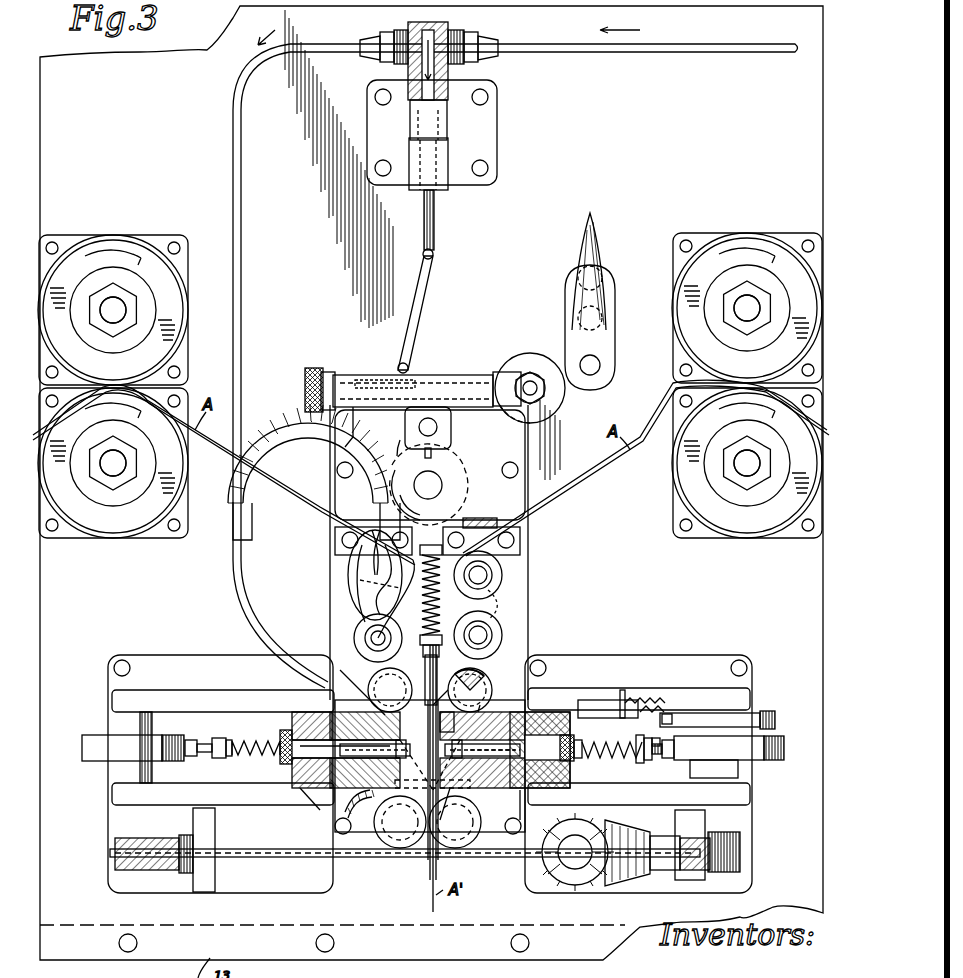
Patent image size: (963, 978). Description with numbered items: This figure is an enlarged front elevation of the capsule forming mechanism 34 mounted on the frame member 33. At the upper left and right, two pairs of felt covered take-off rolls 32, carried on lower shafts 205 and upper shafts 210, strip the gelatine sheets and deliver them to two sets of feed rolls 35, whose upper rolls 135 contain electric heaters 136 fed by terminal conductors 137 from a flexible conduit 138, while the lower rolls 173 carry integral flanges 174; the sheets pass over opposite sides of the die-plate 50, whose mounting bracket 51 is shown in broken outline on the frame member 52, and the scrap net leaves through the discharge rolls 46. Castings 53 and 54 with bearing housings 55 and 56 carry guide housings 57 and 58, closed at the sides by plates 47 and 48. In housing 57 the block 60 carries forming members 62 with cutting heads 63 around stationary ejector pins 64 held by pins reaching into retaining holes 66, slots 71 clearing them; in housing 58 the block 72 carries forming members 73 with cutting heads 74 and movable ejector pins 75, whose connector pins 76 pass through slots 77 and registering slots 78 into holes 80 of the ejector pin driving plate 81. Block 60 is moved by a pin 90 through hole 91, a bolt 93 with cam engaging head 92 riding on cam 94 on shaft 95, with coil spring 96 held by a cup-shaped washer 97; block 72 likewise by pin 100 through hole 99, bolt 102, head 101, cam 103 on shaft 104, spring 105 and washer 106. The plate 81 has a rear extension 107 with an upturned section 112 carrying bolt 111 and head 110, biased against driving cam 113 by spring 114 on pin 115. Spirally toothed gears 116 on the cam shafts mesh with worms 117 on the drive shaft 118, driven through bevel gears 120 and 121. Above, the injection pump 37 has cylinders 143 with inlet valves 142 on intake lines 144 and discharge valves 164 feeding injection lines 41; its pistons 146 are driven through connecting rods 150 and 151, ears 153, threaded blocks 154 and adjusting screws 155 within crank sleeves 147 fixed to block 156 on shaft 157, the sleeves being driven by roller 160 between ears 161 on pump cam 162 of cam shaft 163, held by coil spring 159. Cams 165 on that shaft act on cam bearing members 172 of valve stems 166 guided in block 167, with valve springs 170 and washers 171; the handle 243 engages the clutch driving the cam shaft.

The take-off rolls 32 is at (180, 313).
The frame member 33 is at (215, 45).
The capsule forming mechanism 34 is at (398, 748).
The feed rolls 35 is at (444, 552).
The injection pump 37 is at (470, 132).
The injection lines 41 is at (241, 275).
The discharge rolls 46 is at (402, 848).
The plate 47 is at (280, 790).
The plate 48 is at (574, 762).
The die-plate 50 is at (432, 769).
The mounting bracket 51 is at (380, 795).
The frame member 52 is at (522, 530).
The casting 53 is at (152, 656).
The casting 54 is at (665, 656).
The bearing housings 55 is at (125, 696).
The bearing housings 56 is at (745, 696).
The guide housing 57 is at (335, 712).
The guide housing 58 is at (500, 712).
The machined block 60 is at (303, 712).
The capsule forming members 62 is at (300, 800).
The cutting head 63 is at (407, 740).
The ejector pin 64 is at (375, 747).
The retaining holes 66 is at (390, 690).
The slots 71 is at (362, 692).
The support block 72 is at (524, 785).
The capsule forming members 73 is at (495, 785).
The cutting head 74 is at (453, 740).
The movable ejector pin 75 is at (482, 748).
The connector pins 76 is at (456, 701).
The slots 77 is at (495, 747).
The registering slots 78 is at (489, 704).
The holes 80 is at (450, 721).
The ejector pin driving plate 81 is at (532, 712).
The pin 90 is at (266, 738).
The hole 91 is at (282, 762).
The cam engaging head 92 is at (190, 740).
The bolt 93 is at (205, 743).
The cam 94 is at (90, 735).
The shaft 95 is at (138, 768).
The coil spring 96 is at (247, 738).
The cup-shaped washer 97 is at (232, 760).
The hole 99 is at (582, 758).
The pin 100 is at (608, 760).
The cam engaging head 101 is at (668, 758).
The bolt 102 is at (656, 756).
The cam 103 is at (775, 748).
The shaft 104 is at (738, 773).
The coil spring 105 is at (640, 765).
The washer 106 is at (648, 765).
The rear extension 107 is at (595, 702).
The cam engaging head 110 is at (666, 713).
The bolt 111 is at (658, 742).
The upturned section 112 is at (622, 700).
The driving cam 113 is at (772, 720).
The coil spring 114 is at (658, 704).
The pin 115 is at (635, 700).
The spirally toothed gear 116 is at (118, 852).
The worms 117 is at (740, 852).
The drive shaft 118 is at (494, 860).
The bevel gear 120 is at (620, 880).
The bevel gear 121 is at (565, 875).
The heated feed rolls 135 is at (495, 610).
The electric heaters 136 is at (492, 572).
The terminal conductors 137 is at (368, 555).
The flexible conduit 138 is at (300, 458).
The inlet valves 142 is at (460, 30).
The cylinders 143 is at (428, 24).
The intake lines 144 is at (580, 58).
The pistons 146 is at (420, 72).
The crank sleeves 147 is at (445, 375).
The connecting rod 150 is at (434, 232).
The connecting rod 151 is at (416, 302).
The ears 153 is at (433, 256).
The internally threaded block 154 is at (360, 375).
The adjusting screw 155 is at (314, 368).
The cylindrical block 156 is at (535, 365).
The shaft 157 is at (524, 375).
The coil spring 159 is at (296, 425).
The cam follower roller 160 is at (437, 432).
The depending ears 161 is at (410, 418).
The pump cam 162 is at (402, 458).
The cam shaft 163 is at (442, 490).
The discharge valve 164 is at (398, 28).
The cams 165 is at (470, 472).
The valve stems 166 is at (441, 598).
The guide block 167 is at (426, 657).
The valve springs 170 is at (440, 635).
The washers 171 is at (440, 566).
The cam bearing members 172 is at (458, 518).
The lower feed rolls 173 is at (385, 670).
The flanges 174 is at (486, 672).
The shafts 205 is at (112, 470).
The shafts 210 is at (108, 300).
The handle 243 is at (598, 242).